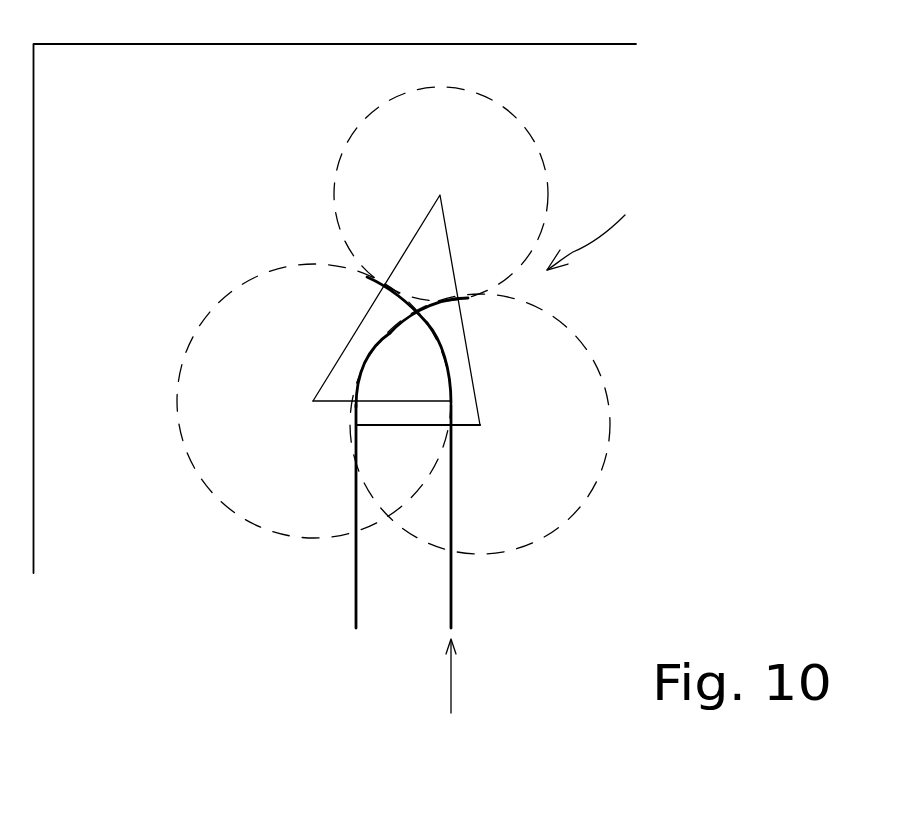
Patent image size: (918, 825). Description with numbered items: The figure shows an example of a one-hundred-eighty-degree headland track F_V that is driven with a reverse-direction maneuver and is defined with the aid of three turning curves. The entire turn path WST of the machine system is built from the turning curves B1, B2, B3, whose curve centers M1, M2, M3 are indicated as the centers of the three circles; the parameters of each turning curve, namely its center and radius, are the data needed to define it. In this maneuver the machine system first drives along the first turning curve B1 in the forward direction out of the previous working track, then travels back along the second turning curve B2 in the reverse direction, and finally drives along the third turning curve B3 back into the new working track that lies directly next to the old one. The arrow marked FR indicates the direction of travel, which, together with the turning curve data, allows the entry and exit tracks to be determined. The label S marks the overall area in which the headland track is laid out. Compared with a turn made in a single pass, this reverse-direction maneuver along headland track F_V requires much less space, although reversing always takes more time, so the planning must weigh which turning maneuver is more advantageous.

The sensor image field S is at (120, 122).
The turn path WST is at (393, 326).
The curve center M1 is at (313, 401).
The curve center M2 is at (440, 195).
The curve center M3 is at (480, 425).
The first turning curve B1 is at (440, 341).
The second turning curve B2 is at (420, 298).
The third turning curve B3 is at (373, 354).
The headland track Fv is at (599, 227).
The direction of travel FR is at (451, 674).